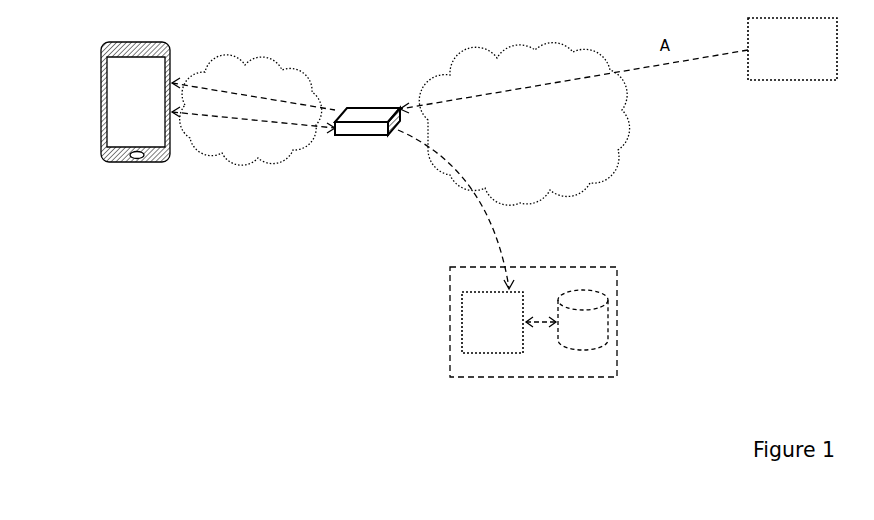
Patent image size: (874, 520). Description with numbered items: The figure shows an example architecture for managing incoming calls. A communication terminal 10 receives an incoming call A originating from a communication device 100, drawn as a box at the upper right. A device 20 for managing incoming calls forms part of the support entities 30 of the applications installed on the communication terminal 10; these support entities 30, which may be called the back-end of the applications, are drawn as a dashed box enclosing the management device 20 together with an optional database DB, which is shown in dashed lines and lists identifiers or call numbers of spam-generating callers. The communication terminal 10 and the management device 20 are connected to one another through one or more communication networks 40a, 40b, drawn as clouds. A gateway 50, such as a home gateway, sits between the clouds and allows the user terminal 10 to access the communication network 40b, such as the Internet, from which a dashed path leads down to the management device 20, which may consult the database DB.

The communication terminal 10 is at (101, 100).
The management device 20 is at (492, 322).
The support entities 30 is at (484, 327).
The communication network 40a is at (250, 68).
The communication network 40b is at (490, 62).
The gateway 50 is at (362, 118).
The communication device 100 is at (792, 49).